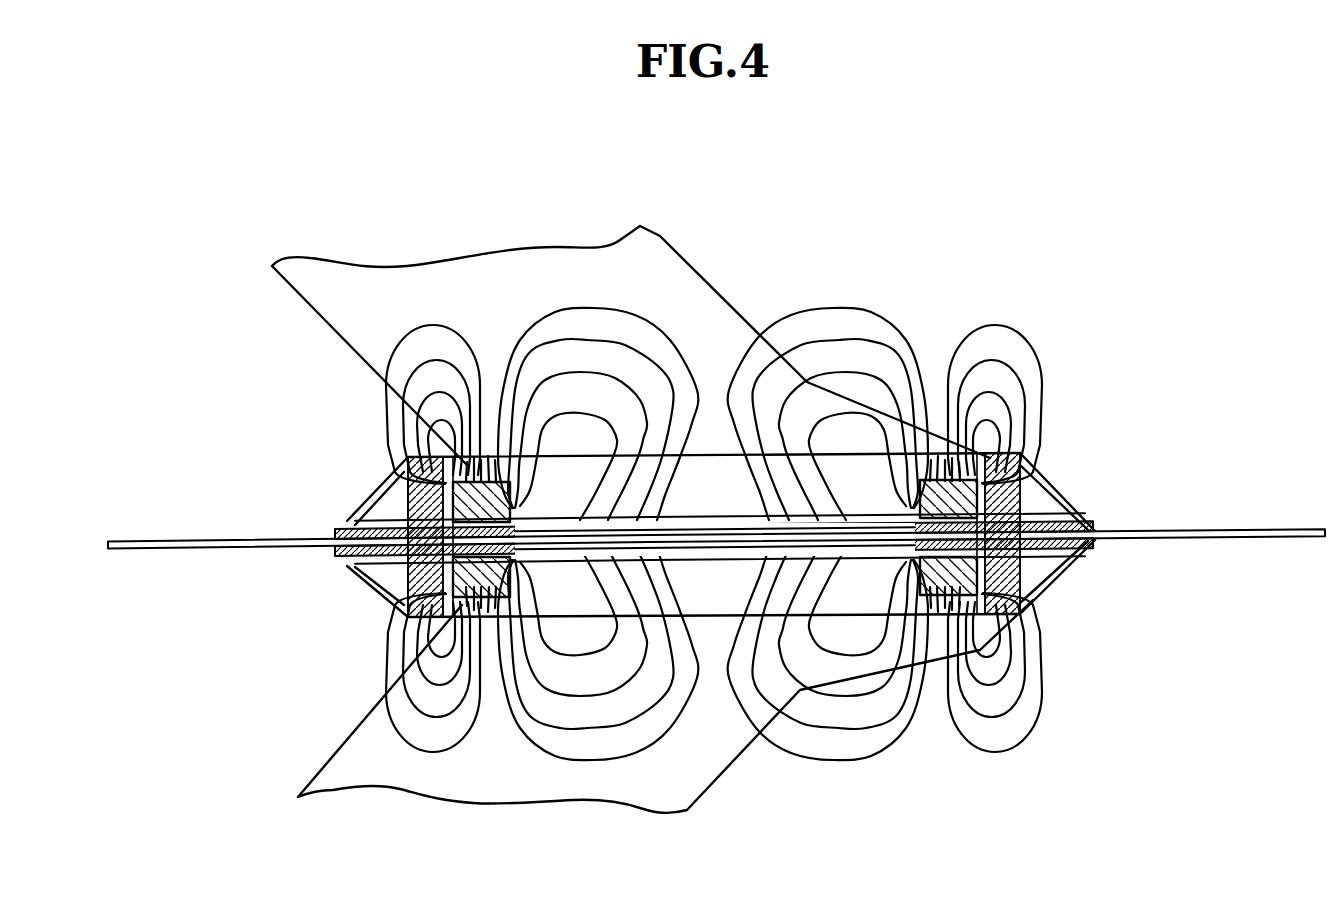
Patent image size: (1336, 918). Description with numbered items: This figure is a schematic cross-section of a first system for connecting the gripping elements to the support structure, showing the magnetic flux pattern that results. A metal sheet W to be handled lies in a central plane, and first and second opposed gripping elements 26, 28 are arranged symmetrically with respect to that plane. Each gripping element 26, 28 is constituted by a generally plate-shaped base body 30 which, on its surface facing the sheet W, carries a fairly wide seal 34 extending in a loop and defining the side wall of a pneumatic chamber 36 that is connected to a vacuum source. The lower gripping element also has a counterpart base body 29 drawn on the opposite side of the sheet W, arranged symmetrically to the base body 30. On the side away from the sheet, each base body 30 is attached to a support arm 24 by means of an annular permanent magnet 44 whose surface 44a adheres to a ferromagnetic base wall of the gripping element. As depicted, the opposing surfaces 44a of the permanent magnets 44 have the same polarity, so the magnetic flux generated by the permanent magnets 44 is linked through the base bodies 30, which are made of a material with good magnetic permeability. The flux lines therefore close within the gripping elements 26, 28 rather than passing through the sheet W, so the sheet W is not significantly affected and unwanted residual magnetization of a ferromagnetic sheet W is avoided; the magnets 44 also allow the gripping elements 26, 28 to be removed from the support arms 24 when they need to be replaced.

The support arm 24 is at (310, 297).
The first gripping element 26 is at (1097, 506).
The second gripping element 28 is at (1068, 584).
The lower pole housing 29 is at (1000, 650).
The base body 30 is at (985, 458).
The seal 34 is at (352, 526).
The pneumatic chamber 36 is at (671, 526).
The permanent magnet 44 is at (508, 484).
The surface of permanent magnet 44a is at (493, 506).
The metal sheet W is at (723, 535).